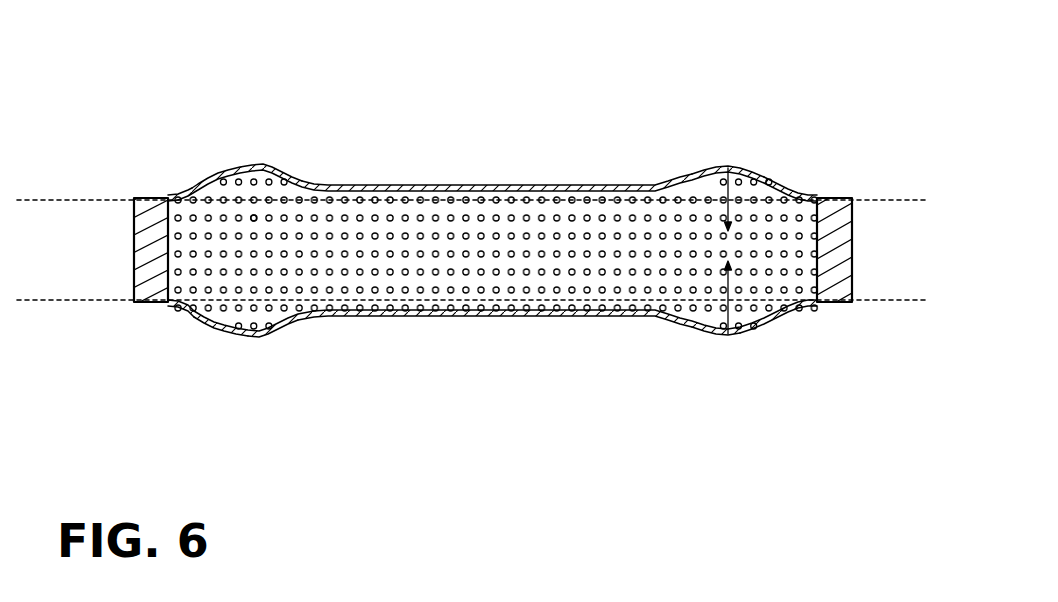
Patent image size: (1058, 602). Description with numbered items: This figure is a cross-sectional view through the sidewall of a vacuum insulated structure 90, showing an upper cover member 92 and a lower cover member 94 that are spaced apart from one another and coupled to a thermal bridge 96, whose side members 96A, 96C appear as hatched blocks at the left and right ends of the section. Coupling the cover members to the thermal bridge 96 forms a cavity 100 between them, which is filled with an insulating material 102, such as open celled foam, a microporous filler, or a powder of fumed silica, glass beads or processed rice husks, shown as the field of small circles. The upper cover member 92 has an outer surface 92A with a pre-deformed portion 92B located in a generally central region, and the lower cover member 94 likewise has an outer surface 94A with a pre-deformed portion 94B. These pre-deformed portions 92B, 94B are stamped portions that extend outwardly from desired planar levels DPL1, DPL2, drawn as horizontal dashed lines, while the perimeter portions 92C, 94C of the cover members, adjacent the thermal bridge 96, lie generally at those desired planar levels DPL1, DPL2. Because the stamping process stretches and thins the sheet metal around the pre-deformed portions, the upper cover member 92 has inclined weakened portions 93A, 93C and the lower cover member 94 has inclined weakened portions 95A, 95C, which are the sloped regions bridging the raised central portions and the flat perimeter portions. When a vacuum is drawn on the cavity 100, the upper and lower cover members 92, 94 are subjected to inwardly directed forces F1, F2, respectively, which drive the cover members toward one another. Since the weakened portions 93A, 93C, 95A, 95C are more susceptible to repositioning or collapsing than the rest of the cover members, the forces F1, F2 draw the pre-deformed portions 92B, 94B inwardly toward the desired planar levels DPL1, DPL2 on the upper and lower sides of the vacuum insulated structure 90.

The vacuum insulated structure 90 is at (678, 113).
The upper cover member 92 is at (508, 178).
The outer surface of upper cover member 92A is at (442, 186).
The pre-deformed portion of upper cover member 92B is at (743, 160).
The perimeter portion of upper cover member 92C is at (153, 196).
The inclined weakened portion of upper cover member 93A is at (213, 173).
The inclined weakened portion of upper cover member 93C is at (773, 173).
The lower cover member 94 is at (506, 327).
The outer surface of lower cover member 94A is at (415, 318).
The pre-deformed portion of lower cover member 94B is at (259, 343).
The perimeter portion of lower cover member 94C is at (148, 305).
The inclined weakened portion of lower cover member 95A is at (208, 327).
The inclined weakened portion of lower cover member 95C is at (765, 330).
The thermal bridge 96 is at (858, 219).
The side member of thermal bridge 96A is at (133, 250).
The side member of thermal bridge 96C is at (852, 240).
The cavity 100 is at (672, 227).
The insulating material 102 is at (255, 216).
The inwardly directed force on upper cover member F1 is at (724, 210).
The inwardly directed force on lower cover member F2 is at (724, 297).
The desired planar level DPL1 is at (78, 199).
The desired planar level DPL2 is at (78, 301).